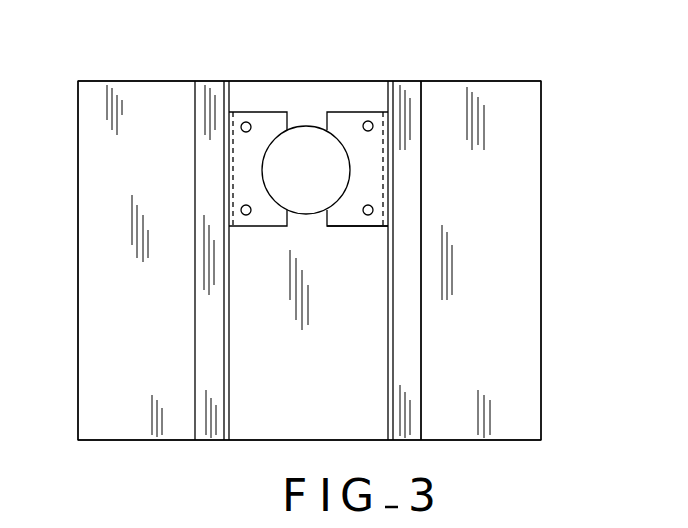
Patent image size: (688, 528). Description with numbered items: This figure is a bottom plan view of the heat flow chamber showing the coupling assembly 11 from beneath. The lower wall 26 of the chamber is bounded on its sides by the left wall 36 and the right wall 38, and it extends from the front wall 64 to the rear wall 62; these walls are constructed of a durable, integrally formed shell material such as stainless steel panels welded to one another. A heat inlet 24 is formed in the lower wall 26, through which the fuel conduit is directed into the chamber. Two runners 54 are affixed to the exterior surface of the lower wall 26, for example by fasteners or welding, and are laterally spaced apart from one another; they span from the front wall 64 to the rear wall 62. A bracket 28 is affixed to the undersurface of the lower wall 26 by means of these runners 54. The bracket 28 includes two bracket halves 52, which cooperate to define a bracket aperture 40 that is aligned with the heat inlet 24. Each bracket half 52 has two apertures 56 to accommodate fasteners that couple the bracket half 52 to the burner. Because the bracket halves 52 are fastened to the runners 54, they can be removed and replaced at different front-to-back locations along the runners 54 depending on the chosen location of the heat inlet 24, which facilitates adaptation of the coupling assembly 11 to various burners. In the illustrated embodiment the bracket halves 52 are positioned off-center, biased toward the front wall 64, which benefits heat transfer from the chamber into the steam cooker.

The coupling assembly 11 is at (584, 103).
The heat inlet 24 is at (281, 115).
The bracket aperture 40 is at (300, 148).
The lower wall 26 is at (493, 92).
The bracket 28 is at (357, 231).
The left wall 36 is at (78, 183).
The right wall 38 is at (541, 182).
The bracket halves 52 is at (345, 110).
The runners 54 is at (205, 286).
The apertures 56 is at (246, 122).
The rear wall 62 is at (132, 441).
The front wall 64 is at (142, 81).